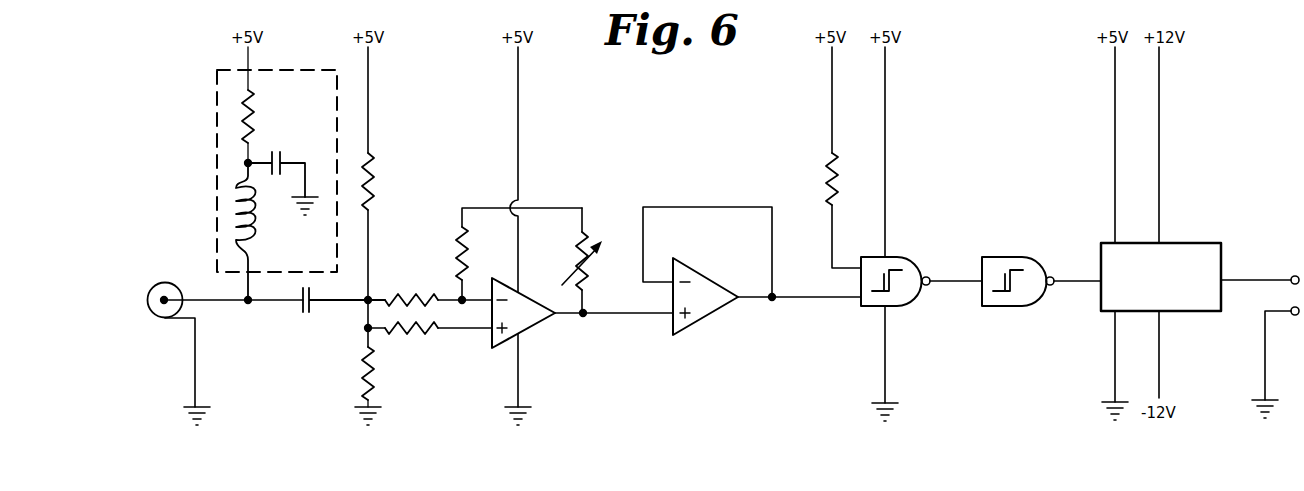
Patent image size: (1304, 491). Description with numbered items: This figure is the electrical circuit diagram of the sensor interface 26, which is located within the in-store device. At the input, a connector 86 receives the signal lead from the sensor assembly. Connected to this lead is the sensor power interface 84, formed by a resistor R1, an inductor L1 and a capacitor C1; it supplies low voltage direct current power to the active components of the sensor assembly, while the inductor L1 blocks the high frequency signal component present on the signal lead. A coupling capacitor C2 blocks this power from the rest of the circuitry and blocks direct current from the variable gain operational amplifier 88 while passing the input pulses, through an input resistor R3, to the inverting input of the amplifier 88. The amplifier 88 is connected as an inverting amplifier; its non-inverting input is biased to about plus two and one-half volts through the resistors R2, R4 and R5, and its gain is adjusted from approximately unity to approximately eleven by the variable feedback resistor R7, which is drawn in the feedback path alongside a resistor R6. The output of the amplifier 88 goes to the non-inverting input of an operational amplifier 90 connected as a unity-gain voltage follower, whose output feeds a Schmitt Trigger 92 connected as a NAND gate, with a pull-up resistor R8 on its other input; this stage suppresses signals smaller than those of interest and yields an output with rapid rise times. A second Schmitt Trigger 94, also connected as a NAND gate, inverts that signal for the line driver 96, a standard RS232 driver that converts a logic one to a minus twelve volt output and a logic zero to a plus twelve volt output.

The sensor interface 26 is at (1001, 44).
The sensor power interface 84 is at (253, 166).
The input connector 86 is at (167, 293).
The variable gain operational amplifier 88 is at (524, 320).
The operational amplifier 90 is at (706, 308).
The Schmitt Trigger 92 is at (908, 290).
The second Schmitt Trigger 94 is at (1022, 262).
The line driver 96 is at (1183, 250).
The resistor R1 is at (246, 113).
The resistor R2 is at (373, 178).
The resistor R3 is at (418, 294).
The resistor R4 is at (428, 333).
The resistor R5 is at (362, 372).
The resistor R6 is at (457, 245).
The variable feedback resistor R7 is at (590, 232).
The resistor R8 is at (826, 178).
The capacitor C1 is at (281, 153).
The coupling capacitor C2 is at (302, 311).
The inductor L1 is at (236, 209).